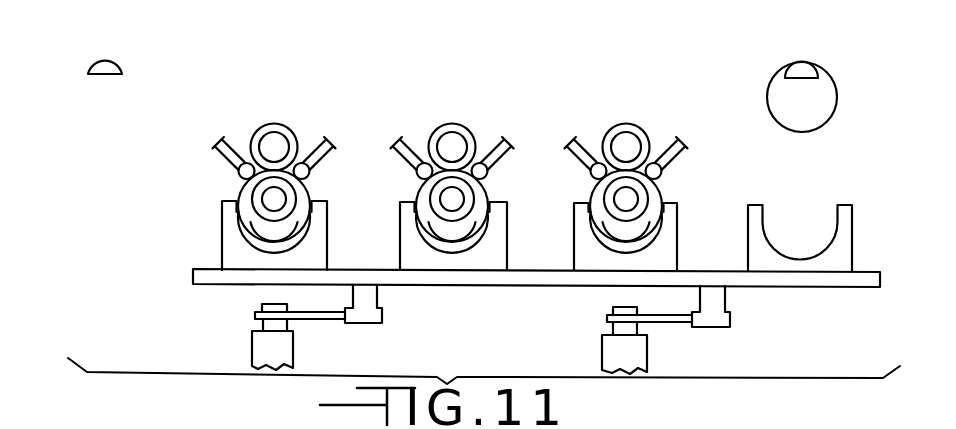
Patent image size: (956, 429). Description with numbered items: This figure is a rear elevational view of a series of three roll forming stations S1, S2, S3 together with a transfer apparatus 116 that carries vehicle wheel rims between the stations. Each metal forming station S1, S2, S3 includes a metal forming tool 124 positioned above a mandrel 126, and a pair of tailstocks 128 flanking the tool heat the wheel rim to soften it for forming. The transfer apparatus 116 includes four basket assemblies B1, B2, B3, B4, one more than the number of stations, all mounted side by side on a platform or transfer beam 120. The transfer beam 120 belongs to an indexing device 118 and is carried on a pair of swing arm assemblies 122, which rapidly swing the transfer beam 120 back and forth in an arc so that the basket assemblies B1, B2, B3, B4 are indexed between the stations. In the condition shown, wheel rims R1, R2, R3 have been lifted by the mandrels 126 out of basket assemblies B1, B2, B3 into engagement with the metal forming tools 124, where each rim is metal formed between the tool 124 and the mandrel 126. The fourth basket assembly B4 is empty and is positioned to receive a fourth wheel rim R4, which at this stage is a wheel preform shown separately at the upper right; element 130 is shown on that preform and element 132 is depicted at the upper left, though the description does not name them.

The transfer apparatus 116 is at (194, 244).
The indexing device 118 is at (254, 313).
The transfer beam 120 is at (830, 280).
The swing arm assemblies 122 is at (318, 322).
The metal forming tool 124 is at (280, 147).
The mandrel 126 is at (277, 199).
The tailstocks 128 is at (219, 139).
The insert segment 130 is at (795, 68).
The shoe 132 is at (85, 57).
The wheel rim R1 is at (240, 225).
The wheel rim R2 is at (418, 238).
The wheel rim R3 is at (600, 236).
The fourth wheel rim R4 is at (840, 97).
The metal forming station S1 is at (297, 127).
The metal forming station S2 is at (478, 131).
The metal forming station S3 is at (651, 133).
The basket assembly B1 is at (233, 247).
The basket assembly B2 is at (421, 257).
The basket assembly B3 is at (587, 257).
The basket assembly B4 is at (760, 258).